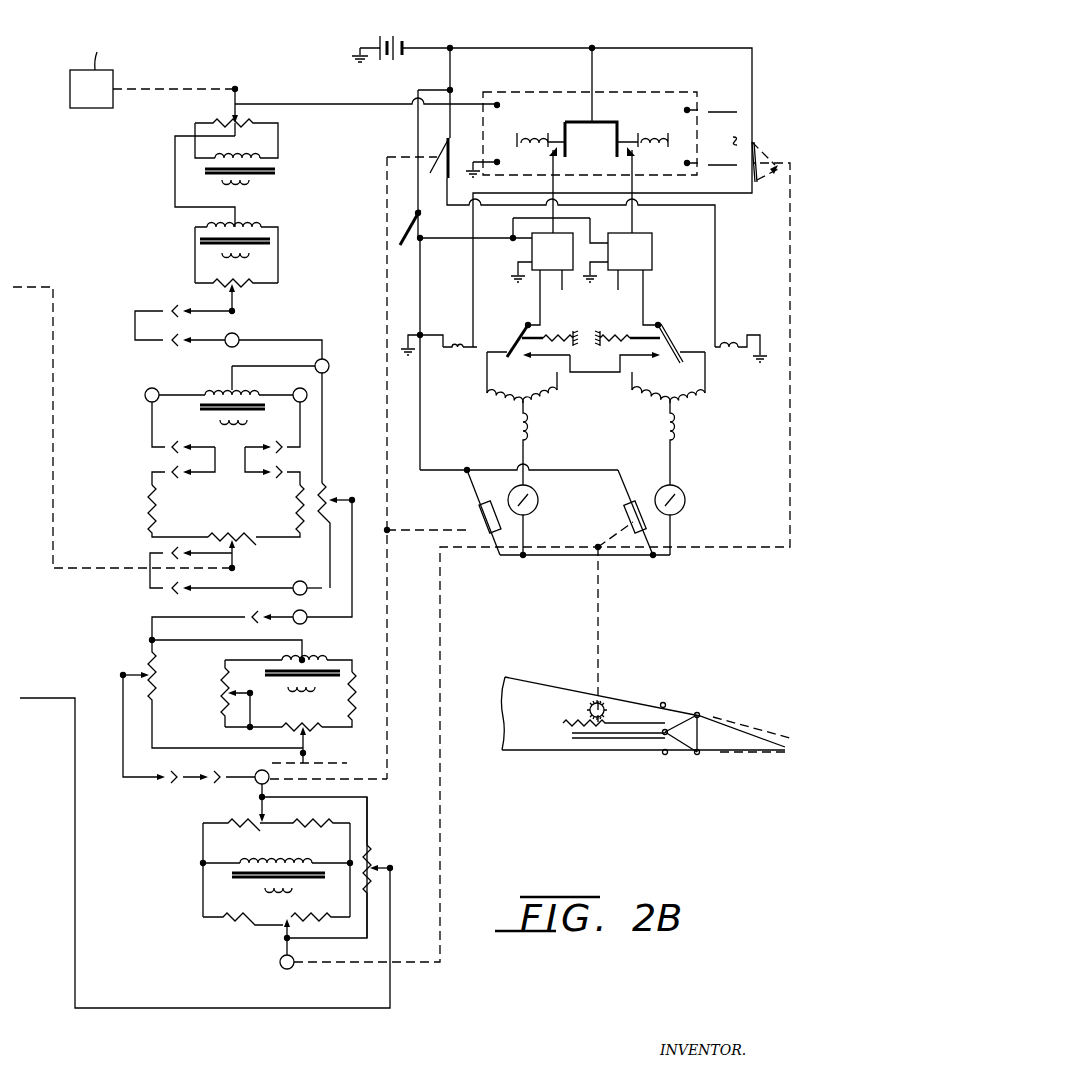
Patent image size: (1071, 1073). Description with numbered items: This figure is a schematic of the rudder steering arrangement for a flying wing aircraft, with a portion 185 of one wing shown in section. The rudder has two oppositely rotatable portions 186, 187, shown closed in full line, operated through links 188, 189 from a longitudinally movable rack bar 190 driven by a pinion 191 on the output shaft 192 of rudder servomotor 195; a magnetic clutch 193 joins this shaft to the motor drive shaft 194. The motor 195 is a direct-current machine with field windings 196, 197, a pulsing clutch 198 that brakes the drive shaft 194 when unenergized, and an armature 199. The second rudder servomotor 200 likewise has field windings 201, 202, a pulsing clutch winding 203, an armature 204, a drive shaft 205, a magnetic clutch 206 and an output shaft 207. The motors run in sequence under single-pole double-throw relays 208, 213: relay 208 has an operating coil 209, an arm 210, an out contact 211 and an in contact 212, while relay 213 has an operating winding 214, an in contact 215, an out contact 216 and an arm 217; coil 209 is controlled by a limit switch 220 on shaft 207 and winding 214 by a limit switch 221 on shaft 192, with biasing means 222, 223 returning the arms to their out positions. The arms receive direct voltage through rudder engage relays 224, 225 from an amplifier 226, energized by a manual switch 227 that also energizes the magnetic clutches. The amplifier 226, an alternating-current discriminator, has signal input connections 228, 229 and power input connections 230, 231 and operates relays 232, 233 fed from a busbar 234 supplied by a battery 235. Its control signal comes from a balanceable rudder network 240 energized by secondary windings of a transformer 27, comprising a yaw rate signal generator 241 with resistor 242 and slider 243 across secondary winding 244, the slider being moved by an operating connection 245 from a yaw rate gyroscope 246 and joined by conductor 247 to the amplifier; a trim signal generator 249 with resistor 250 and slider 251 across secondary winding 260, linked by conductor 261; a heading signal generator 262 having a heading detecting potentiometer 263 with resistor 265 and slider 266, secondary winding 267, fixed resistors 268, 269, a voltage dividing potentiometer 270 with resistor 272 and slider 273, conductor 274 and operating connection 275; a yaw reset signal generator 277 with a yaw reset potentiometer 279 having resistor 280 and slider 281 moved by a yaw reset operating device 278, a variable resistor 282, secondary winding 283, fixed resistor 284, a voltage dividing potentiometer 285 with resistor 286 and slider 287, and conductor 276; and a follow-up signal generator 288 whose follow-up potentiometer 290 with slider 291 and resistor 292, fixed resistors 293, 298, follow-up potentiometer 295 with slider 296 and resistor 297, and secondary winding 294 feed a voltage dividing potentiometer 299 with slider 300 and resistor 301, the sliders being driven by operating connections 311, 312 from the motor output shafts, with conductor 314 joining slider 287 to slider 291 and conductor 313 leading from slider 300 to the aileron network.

The transformer 27 is at (258, 180).
The wing portion 185 is at (545, 677).
The rudder portion 186 is at (740, 735).
The rudder portion 187 is at (750, 753).
The link 188 is at (685, 713).
The link 189 is at (688, 755).
The rack bar 190 is at (580, 736).
The pinion 191 is at (587, 710).
The output shaft 192 is at (723, 553).
The magnetic clutch 193 is at (622, 512).
The drive shaft 194 is at (650, 505).
The rudder servomotor 195 is at (750, 458).
The field winding 196 is at (694, 407).
The field winding 197 is at (645, 402).
The pulsing clutch 198 is at (660, 438).
The armature 199 is at (687, 500).
The rudder servomotor 200 is at (575, 443).
The field winding 201 is at (550, 404).
The field winding 202 is at (486, 398).
The pulsing clutch winding 203 is at (517, 439).
The armature 204 is at (541, 500).
The drive shaft 205 is at (507, 502).
The magnetic clutch 206 is at (448, 503).
The output shaft 207 is at (390, 530).
The relay 208 is at (728, 332).
The operating coil 209 is at (730, 355).
The relay arm 210 is at (669, 325).
The out contact 211 is at (643, 362).
The in contact 212 is at (683, 339).
The relay 213 is at (449, 335).
The operating winding 214 is at (428, 355).
The in contact 215 is at (488, 355).
The out contact 216 is at (546, 360).
The relay arm 217 is at (527, 330).
The limit switch 220 is at (455, 152).
The limit switch 221 is at (782, 180).
The biasing means 222 is at (557, 333).
The biasing means 223 is at (612, 333).
The rudder engage relay 224 is at (532, 275).
The rudder engage relay 225 is at (652, 246).
The amplifier 226 is at (660, 90).
The switch 227 is at (399, 226).
The signal input connection 228 is at (466, 104).
The signal input connection 229 is at (492, 163).
The power input connection 230 is at (707, 112).
The power input connection 231 is at (706, 172).
The amplifier relay 232 is at (528, 130).
The amplifier relay 233 is at (645, 130).
The D.C. busbar 234 is at (563, 48).
The battery 235 is at (397, 32).
The rudder network 240 is at (143, 268).
The yaw rate signal generator 241 is at (260, 119).
The resistor 242 is at (230, 119).
The slider 243 is at (235, 97).
The secondary winding 244 is at (240, 160).
The operating connection 245 is at (158, 89).
The yaw rate gyroscope 246 is at (85, 110).
The conductor 247 is at (330, 104).
The trim signal generator 249 is at (248, 302).
The resistor 250 is at (260, 288).
The slider 251 is at (230, 305).
The secondary winding 260 is at (256, 225).
The conductor 261 is at (175, 185).
The heading signal generator 262 is at (240, 496).
The heading detecting potentiometer 263 is at (228, 547).
The resistor 265 is at (219, 533).
The slider 266 is at (235, 565).
The secondary winding 267 is at (230, 394).
The fixed resistor 268 is at (148, 497).
The fixed resistor 269 is at (297, 516).
The voltage dividing potentiometer 270 is at (333, 489).
The resistor 272 is at (326, 513).
The slider 273 is at (356, 496).
The conductor 274 is at (300, 341).
The operating connection 275 is at (30, 284).
The conductor 276 is at (352, 599).
The yaw reset signal generator 277 is at (373, 658).
The yaw reset operating device 278 is at (268, 765).
The yaw reset potentiometer 279 is at (344, 738).
The resistor 280 is at (293, 730).
The slider 281 is at (309, 738).
The variable resistor 282 is at (230, 693).
The secondary winding 283 is at (306, 657).
The fixed resistor 284 is at (349, 727).
The voltage dividing potentiometer 285 is at (149, 642).
The resistor 286 is at (148, 662).
The slider 287 is at (123, 675).
The follow-up signal generator 288 is at (348, 853).
The follow-up potentiometer 290 is at (238, 800).
The slider 291 is at (266, 811).
The resistor 292 is at (245, 827).
The fixed resistor 293 is at (321, 823).
The secondary winding 294 is at (274, 858).
The follow-up potentiometer 295 is at (265, 943).
The slider 296 is at (282, 968).
The resistor 297 is at (305, 914).
The fixed resistor 298 is at (237, 920).
The voltage dividing potentiometer 299 is at (379, 840).
The slider 300 is at (392, 872).
The resistor 301 is at (373, 861).
The operating connection 311 is at (392, 777).
The operating connection 312 is at (447, 852).
The conductor 313 is at (45, 698).
The conductor 314 is at (121, 707).